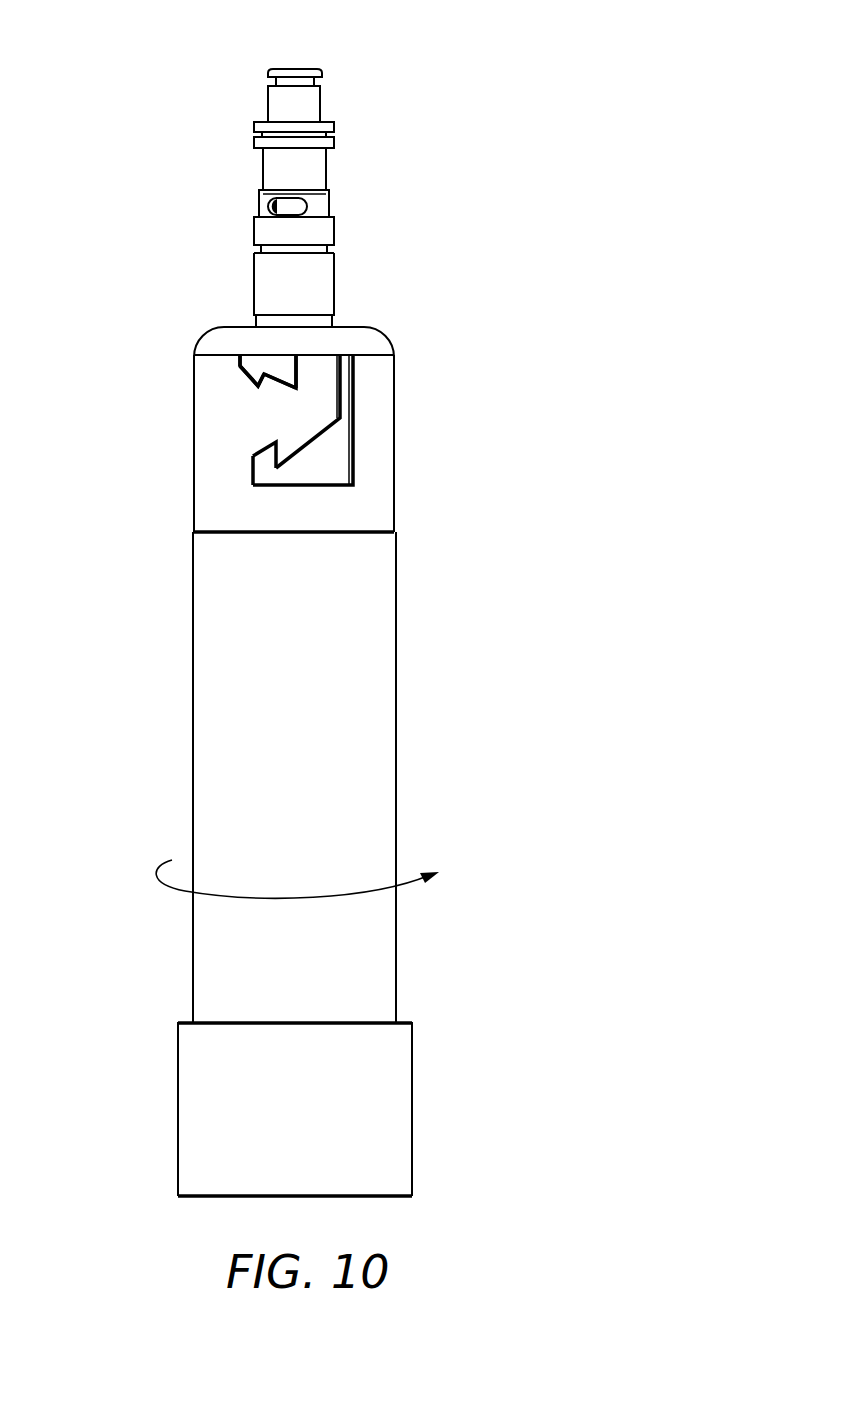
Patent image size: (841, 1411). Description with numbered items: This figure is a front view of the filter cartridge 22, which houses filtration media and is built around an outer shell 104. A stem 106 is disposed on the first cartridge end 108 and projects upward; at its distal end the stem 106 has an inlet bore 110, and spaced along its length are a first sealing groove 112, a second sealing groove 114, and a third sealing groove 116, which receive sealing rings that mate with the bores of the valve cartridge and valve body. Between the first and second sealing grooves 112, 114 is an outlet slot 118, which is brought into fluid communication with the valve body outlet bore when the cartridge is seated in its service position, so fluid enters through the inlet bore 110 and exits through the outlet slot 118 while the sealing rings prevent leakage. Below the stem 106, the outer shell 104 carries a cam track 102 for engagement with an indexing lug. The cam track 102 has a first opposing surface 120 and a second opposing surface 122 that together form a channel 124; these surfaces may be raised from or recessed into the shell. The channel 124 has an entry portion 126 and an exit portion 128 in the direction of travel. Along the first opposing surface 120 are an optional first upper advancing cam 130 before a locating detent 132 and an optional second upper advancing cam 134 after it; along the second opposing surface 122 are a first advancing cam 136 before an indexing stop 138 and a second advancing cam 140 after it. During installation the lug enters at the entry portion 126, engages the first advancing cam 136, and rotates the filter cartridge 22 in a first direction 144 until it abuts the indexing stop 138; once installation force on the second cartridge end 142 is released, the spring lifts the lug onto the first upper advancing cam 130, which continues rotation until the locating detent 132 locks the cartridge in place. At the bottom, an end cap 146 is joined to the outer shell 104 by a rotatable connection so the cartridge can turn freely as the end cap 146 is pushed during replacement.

The filter cartridge 22 is at (126, 597).
The cam track 102 is at (383, 395).
The outer shell 104 is at (398, 779).
The stem 106 is at (327, 173).
The first cartridge end 108 is at (227, 328).
The inlet bore 110 is at (288, 68).
The first sealing groove 112 is at (316, 82).
The second sealing groove 114 is at (329, 137).
The third sealing groove 116 is at (328, 248).
The outlet slot 118 is at (270, 209).
The first opposing surface 120 is at (266, 372).
The second opposing surface 122 is at (340, 367).
The channel 124 is at (313, 413).
The entry portion 126 is at (317, 362).
The exit portion 128 is at (280, 425).
The first upper advancing cam 130 is at (266, 391).
The locating detent 132 is at (256, 360).
The second upper advancing cam 134 is at (250, 377).
The first advancing cam 136 is at (307, 455).
The indexing stop 138 is at (251, 464).
The second advancing cam 140 is at (253, 452).
The second cartridge end 142 is at (380, 1198).
The first direction 144 is at (172, 887).
The end cap 146 is at (396, 1090).